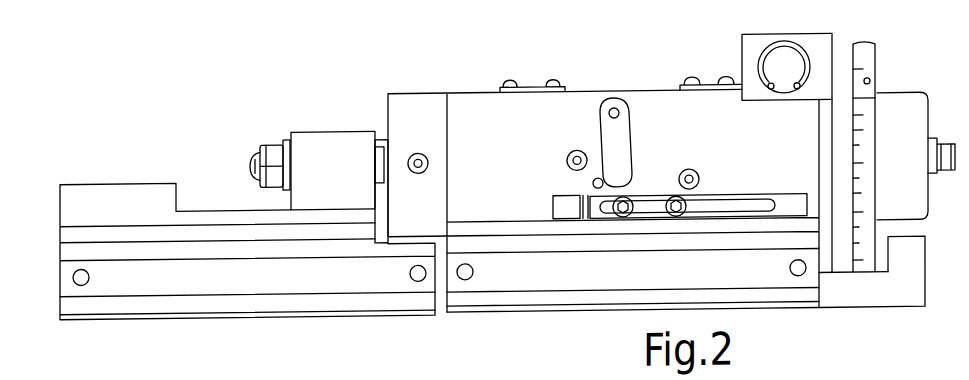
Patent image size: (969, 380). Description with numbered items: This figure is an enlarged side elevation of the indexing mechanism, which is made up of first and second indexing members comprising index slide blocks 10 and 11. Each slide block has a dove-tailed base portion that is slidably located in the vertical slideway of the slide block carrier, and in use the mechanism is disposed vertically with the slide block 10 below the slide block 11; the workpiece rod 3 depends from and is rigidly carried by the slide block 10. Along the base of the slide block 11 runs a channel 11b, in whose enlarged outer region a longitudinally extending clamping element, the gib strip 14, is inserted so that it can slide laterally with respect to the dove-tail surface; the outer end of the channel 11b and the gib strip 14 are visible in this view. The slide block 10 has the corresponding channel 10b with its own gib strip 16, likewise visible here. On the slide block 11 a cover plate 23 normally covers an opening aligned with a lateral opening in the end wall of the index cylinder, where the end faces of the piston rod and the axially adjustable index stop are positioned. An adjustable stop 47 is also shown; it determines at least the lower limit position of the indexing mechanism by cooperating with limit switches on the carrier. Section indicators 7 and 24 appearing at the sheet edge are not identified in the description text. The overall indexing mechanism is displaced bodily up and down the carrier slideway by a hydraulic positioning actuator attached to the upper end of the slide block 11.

The index slide block 10 is at (205, 152).
The channel 10b is at (302, 290).
The gib strip 16 is at (237, 275).
The workpiece rod 3 is at (96, 328).
The index slide block 11 is at (610, 76).
The channel 11b is at (518, 286).
The gib strip 14 is at (592, 277).
The cover plate 23 is at (631, 144).
The adjustable stop 47 is at (742, 199).
The section line 7- 7 is at (170, 374).
The element 24 is at (335, 375).